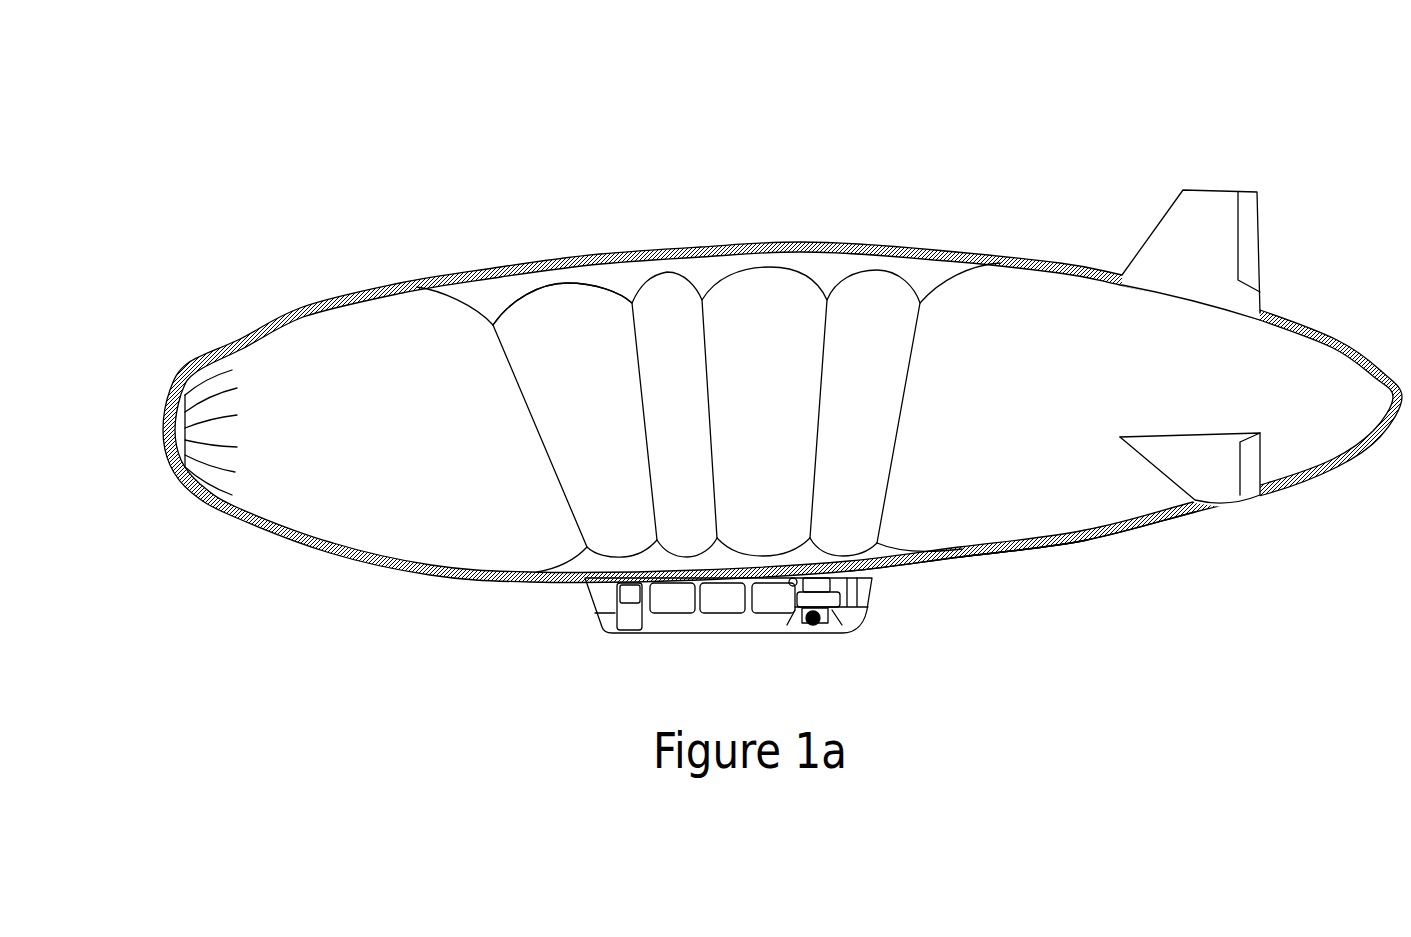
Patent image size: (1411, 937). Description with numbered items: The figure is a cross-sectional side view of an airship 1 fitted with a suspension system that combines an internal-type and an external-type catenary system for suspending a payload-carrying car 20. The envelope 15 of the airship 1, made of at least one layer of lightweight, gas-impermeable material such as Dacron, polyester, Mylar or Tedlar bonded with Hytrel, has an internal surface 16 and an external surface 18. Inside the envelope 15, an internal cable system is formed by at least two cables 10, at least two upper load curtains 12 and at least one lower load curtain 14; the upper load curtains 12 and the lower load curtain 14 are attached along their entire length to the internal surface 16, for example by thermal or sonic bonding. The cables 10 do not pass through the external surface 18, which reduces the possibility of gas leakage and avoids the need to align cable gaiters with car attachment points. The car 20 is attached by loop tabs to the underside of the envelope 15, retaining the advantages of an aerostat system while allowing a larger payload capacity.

The airship 1 is at (296, 267).
The cables 10 is at (541, 445).
The upper load curtains 12 is at (625, 282).
The lower load curtain 14 is at (872, 553).
The envelope 15 is at (1087, 539).
The internal surface 16 is at (1017, 540).
The external surface 18 is at (935, 248).
The car 20 is at (595, 617).